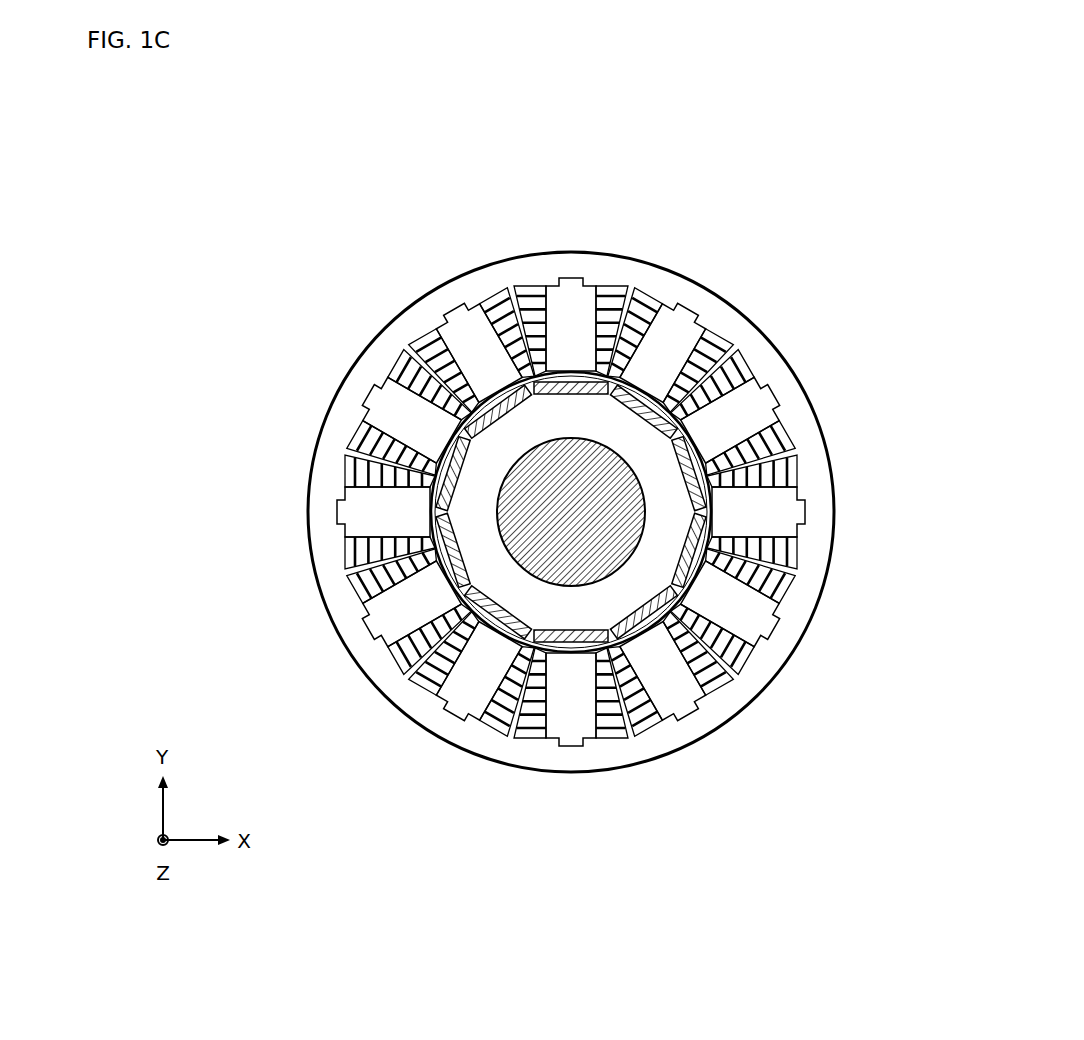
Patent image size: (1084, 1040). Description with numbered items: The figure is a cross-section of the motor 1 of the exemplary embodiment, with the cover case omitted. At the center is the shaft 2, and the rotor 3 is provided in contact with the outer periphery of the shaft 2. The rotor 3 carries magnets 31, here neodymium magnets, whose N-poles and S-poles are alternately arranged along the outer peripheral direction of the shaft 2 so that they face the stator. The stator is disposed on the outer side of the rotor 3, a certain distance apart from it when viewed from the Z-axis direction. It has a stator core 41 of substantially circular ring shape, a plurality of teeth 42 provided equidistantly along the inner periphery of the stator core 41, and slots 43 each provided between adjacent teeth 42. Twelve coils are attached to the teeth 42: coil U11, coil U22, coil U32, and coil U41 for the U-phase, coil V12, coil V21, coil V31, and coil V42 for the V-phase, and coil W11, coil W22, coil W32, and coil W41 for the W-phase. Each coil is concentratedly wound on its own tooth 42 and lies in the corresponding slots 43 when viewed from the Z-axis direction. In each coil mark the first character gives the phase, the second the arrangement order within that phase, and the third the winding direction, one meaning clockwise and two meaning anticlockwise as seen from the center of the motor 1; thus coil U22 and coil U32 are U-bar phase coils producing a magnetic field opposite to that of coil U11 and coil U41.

The motor 1 is at (325, 172).
The shaft 2 is at (516, 484).
The rotor 3 is at (352, 478).
The magnets 31 is at (556, 396).
The stator core 41 is at (760, 343).
The teeth 42 is at (571, 512).
The slots 43 is at (500, 301).
The coil W41 is at (571, 235).
The coil W32 is at (710, 272).
The coil U11 is at (432, 272).
The coil U22 is at (331, 374).
The coil V42 is at (811, 374).
The coil V12 is at (294, 512).
The coil V31 is at (848, 512).
The coil V21 is at (331, 650).
The coil U41 is at (811, 650).
The coil W11 is at (432, 752).
The coil W22 is at (571, 789).
The coil U32 is at (710, 752).